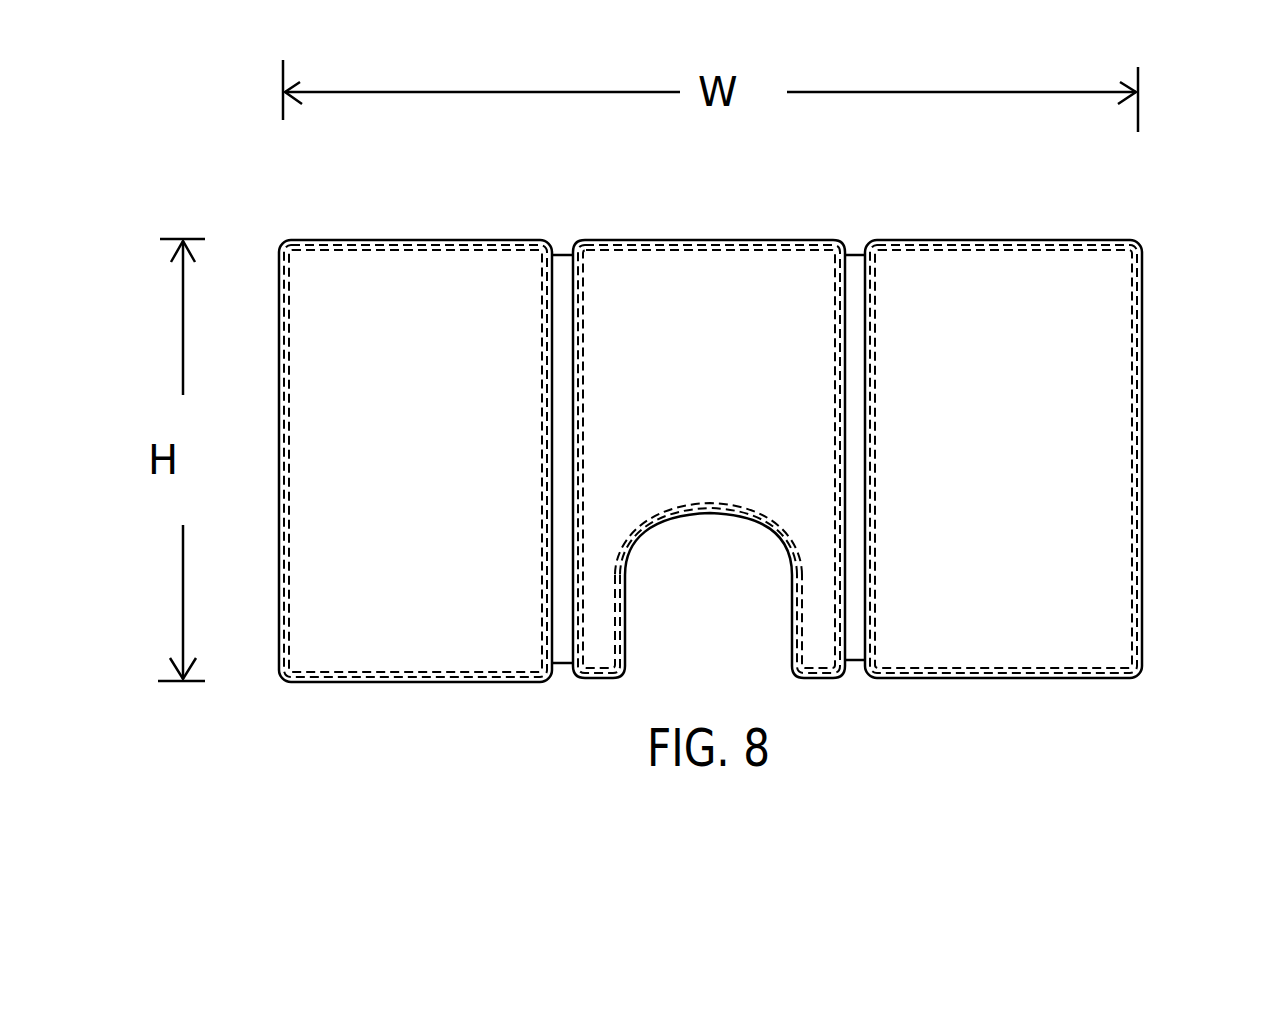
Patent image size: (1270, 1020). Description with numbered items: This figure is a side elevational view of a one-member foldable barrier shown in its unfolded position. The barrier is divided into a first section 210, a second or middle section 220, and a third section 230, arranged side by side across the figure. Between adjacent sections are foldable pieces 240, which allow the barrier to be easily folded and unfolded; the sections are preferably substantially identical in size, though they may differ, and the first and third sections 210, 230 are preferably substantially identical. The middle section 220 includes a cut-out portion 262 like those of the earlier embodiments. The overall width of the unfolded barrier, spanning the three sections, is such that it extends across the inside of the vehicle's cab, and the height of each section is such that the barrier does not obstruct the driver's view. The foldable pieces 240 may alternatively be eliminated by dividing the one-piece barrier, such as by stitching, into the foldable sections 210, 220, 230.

The first section 210 is at (390, 595).
The second section 220 is at (782, 488).
The third section 230 is at (1047, 438).
The foldable pieces 240 is at (562, 277).
The cut-out portion 262 is at (628, 620).